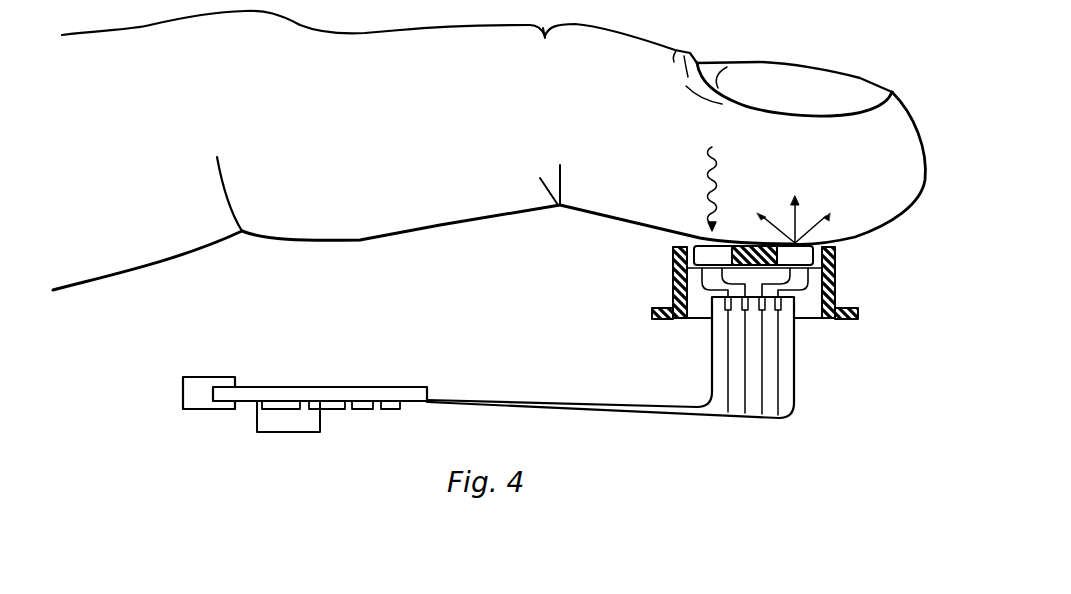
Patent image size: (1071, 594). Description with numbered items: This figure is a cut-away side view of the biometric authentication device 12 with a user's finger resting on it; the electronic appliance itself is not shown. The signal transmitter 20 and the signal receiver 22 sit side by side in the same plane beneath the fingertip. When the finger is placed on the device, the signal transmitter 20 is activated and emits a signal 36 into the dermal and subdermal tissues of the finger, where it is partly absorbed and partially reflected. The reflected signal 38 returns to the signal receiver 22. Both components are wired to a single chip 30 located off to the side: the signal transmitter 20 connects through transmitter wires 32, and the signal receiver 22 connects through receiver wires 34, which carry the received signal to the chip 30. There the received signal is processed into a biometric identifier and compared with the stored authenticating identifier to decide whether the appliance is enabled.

The biometric authentication device 12 is at (545, 367).
The signal transmitter 20 is at (808, 254).
The signal receiver 22 is at (692, 243).
The chip 30 is at (248, 402).
The transmitter wires 32 is at (794, 363).
The receiver wires 34 is at (712, 360).
The signal 36 is at (800, 216).
The reflected signal 38 is at (706, 176).